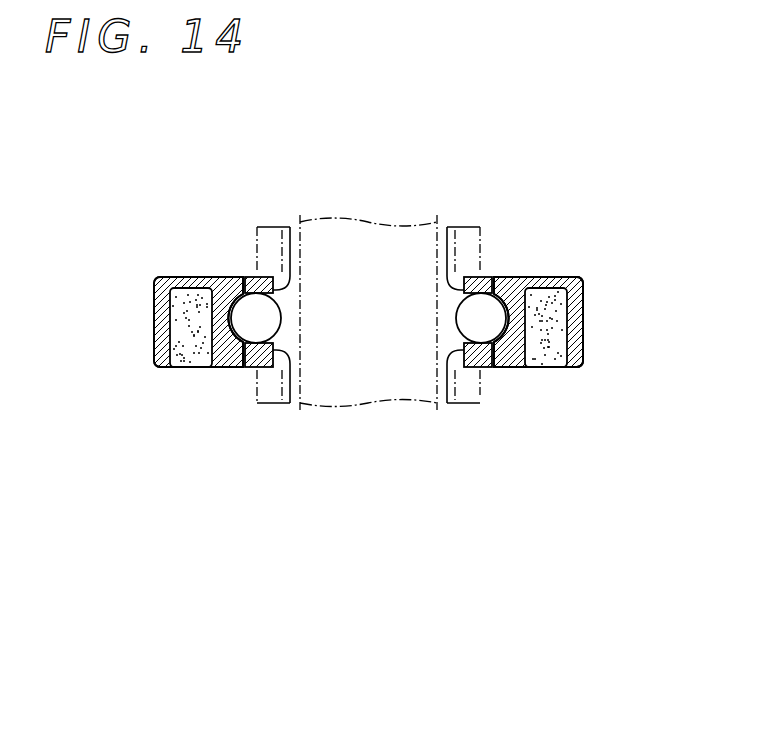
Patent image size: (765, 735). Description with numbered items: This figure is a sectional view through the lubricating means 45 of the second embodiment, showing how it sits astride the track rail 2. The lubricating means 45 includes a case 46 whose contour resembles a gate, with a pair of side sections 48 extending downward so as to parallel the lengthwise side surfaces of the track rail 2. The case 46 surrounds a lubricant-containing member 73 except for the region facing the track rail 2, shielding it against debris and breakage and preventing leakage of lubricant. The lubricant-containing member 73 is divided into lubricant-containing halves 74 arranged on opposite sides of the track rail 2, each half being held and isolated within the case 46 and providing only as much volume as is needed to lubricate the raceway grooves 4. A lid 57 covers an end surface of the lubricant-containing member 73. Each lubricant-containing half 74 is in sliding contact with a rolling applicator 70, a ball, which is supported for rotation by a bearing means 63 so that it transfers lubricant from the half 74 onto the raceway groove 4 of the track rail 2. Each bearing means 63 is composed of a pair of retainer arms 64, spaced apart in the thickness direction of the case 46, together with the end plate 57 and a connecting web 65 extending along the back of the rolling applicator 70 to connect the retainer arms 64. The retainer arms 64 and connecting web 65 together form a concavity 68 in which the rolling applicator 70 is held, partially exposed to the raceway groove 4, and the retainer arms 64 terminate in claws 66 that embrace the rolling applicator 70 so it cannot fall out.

The track rail 2 is at (368, 340).
The raceway groove 4 is at (257, 227).
The lubricating means 45 is at (590, 272).
The case 46 is at (585, 300).
The side section 48 is at (165, 315).
The lid 57 is at (180, 278).
The bearing means 63 is at (256, 370).
The retainer arm 64 is at (257, 282).
The connecting web 65 is at (225, 310).
The claw 66 is at (285, 262).
The concavity 68 is at (237, 278).
The rolling applicator 70 is at (262, 318).
The lubricant-containing member 73 is at (163, 371).
The lubricant-containing half 74 is at (192, 370).